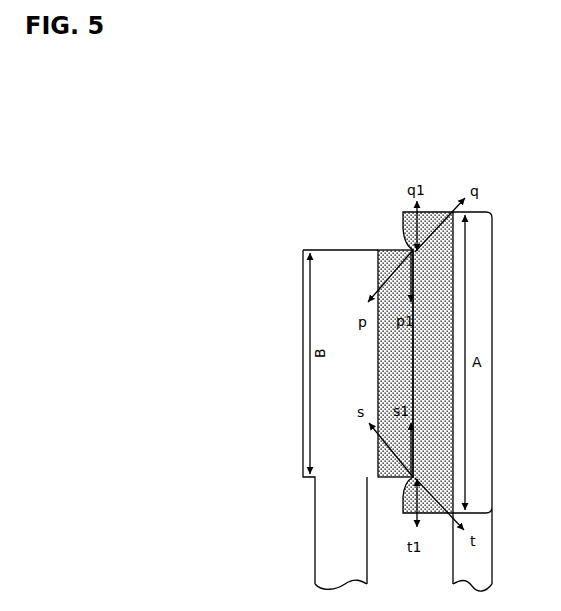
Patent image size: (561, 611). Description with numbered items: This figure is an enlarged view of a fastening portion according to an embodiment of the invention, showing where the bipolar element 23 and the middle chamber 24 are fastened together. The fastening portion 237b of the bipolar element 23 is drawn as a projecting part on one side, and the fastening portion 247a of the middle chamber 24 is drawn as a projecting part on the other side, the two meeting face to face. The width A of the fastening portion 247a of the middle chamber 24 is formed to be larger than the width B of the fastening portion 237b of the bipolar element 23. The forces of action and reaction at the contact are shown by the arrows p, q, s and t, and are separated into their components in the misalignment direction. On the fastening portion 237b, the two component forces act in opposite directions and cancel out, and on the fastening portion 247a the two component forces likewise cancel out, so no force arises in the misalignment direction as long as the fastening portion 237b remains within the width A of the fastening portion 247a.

The bipolar element 23 is at (281, 175).
The fastening portion of the bipolar element 237b is at (381, 216).
The fastening portion of the middle chamber 247a is at (441, 177).
The middle chamber 24 is at (498, 177).